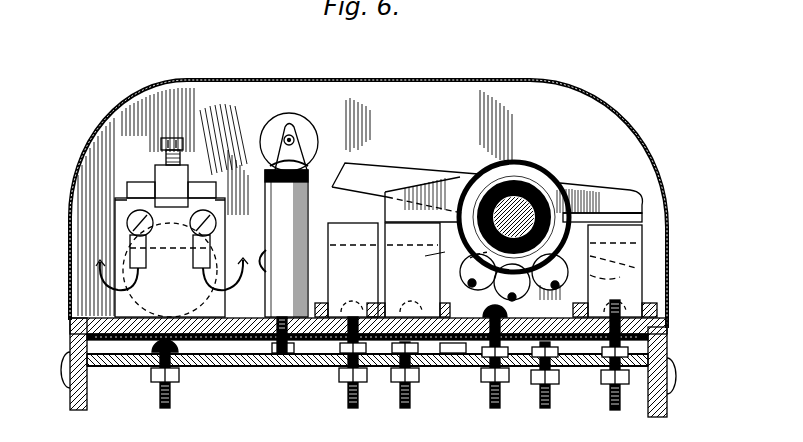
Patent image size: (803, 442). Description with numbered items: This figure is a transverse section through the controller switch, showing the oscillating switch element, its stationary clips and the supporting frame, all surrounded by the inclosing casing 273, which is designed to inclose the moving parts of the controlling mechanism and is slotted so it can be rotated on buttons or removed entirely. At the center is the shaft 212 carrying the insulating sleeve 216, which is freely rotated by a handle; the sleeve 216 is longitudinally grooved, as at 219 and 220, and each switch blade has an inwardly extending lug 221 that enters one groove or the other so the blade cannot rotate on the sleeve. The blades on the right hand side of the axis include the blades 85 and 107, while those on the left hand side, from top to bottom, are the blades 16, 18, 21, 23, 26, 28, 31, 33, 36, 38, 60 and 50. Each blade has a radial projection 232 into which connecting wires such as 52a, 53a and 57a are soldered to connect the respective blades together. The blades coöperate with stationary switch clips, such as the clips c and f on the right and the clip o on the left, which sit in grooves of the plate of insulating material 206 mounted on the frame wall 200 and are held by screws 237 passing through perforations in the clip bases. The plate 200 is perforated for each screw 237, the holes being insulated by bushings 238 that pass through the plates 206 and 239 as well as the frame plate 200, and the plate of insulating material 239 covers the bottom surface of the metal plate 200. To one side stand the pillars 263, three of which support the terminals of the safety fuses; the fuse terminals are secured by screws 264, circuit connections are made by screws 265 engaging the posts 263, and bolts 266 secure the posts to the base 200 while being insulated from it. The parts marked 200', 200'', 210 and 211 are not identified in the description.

The inclosing casing 273 is at (333, 82).
The screws 264 is at (308, 162).
The pillars 263 is at (292, 220).
The screws 265 is at (264, 270).
The switch blade 107 is at (390, 170).
The switch blade 85 is at (430, 192).
The groove 219 is at (505, 180).
The insulating sleeve 216 is at (545, 200).
The inwardly extending lug 221 is at (556, 212).
The groove 220 is at (612, 200).
The switch blade 38 is at (640, 210).
The radial projection 232 is at (462, 270).
The connecting wire 52a is at (464, 287).
The connecting wire 57a is at (512, 301).
The connecting wire 53a is at (600, 285).
The stationary switch clip c is at (441, 246).
The stationary switch clip f is at (334, 254).
The stationary switch clip o is at (637, 260).
The plate of insulating material 206 is at (653, 322).
The rear wall 200 is at (404, 329).
The plate of insulating material 239 is at (666, 356).
The base leg 200' is at (81, 380).
The base leg 200'' is at (696, 372).
The knob 210 is at (680, 377).
The bolts 266 is at (287, 354).
The screws 237 is at (348, 398).
The bushings 238 is at (478, 346).
The shaft 212 is at (537, 373).
The terminal screw 211 is at (583, 368).
The switch blade 16 is at (165, 434).
The switch blade 18 is at (197, 434).
The switch blade 21 is at (232, 434).
The switch blade 23 is at (266, 434).
The switch blade 26 is at (305, 434).
The switch blade 28 is at (343, 434).
The switch blade 31 is at (378, 434).
The switch blade 33 is at (410, 434).
The switch blade 36 is at (443, 434).
The switch blade 60 is at (515, 434).
The switch blade 50 is at (553, 434).